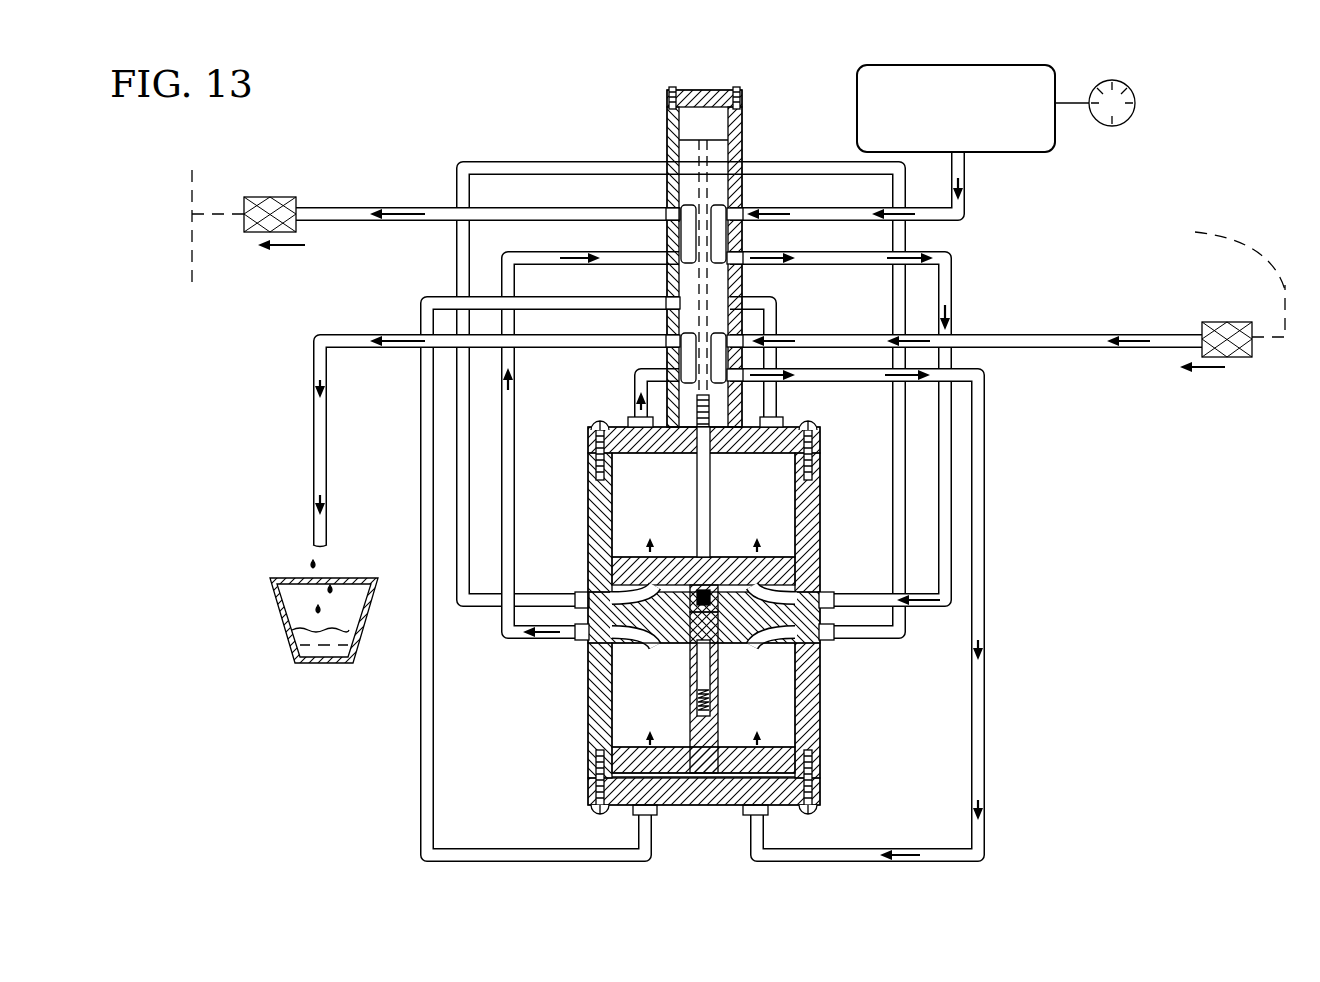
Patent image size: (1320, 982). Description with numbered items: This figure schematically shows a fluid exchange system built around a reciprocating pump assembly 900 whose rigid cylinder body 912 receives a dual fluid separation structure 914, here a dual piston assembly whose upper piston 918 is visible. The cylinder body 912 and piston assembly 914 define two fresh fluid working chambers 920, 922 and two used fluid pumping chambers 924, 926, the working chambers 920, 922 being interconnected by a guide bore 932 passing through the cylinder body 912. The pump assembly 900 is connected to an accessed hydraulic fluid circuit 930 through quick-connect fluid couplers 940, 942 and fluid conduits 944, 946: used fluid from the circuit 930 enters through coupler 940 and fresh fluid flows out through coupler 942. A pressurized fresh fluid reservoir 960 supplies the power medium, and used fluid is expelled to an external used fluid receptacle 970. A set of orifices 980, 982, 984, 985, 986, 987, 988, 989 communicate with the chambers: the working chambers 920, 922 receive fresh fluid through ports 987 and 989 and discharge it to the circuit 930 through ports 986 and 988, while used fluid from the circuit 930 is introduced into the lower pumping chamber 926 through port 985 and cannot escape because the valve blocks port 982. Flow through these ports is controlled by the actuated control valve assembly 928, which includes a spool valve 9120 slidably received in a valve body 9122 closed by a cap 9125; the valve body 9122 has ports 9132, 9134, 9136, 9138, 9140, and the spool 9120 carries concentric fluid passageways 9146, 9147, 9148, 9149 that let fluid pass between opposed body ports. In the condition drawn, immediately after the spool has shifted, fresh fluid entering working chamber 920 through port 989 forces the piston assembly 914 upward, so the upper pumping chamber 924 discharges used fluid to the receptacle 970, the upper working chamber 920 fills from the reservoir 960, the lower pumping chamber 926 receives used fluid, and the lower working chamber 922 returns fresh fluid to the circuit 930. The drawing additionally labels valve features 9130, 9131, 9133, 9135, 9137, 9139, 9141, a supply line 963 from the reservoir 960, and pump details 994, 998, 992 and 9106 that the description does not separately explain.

The control valve assembly 928 is at (661, 97).
The cap 9125 is at (715, 90).
The valve body 9122 is at (742, 118).
The spool valve 9120 is at (745, 150).
The port 9136 is at (668, 172).
The valve port 9137 is at (668, 215).
The port 9138 is at (680, 262).
The valve port 9139 is at (668, 300).
The port 9140 is at (668, 340).
The spool passage 9141 is at (672, 368).
The valve port 9130 is at (742, 170).
The spool passage 9131 is at (742, 255).
The port 9132 is at (742, 262).
The valve port 9133 is at (745, 310).
The port 9134 is at (745, 345).
The valve port 9135 is at (745, 382).
The concentric fluid passageway 9146 is at (795, 252).
The concentric fluid passageway 9147 is at (745, 377).
The concentric fluid passageway 9148 is at (605, 252).
The concentric fluid passageway 9149 is at (660, 390).
The hydraulic fluid circuit 930 is at (192, 183).
The quick-connect fluid coupler 942 is at (278, 197).
The fluid conduit 944 is at (378, 208).
The fluid conduit 946 is at (1075, 333).
The quick-connect coupler 940 is at (1212, 322).
The pressurized fresh fluid reservoir 960 is at (1048, 72).
The supply conduit 963 is at (960, 222).
The port 985 is at (320, 335).
The used fluid receptacle 970 is at (305, 640).
The orifice 980 is at (625, 420).
The orifice 984 is at (790, 421).
The reciprocating pump assembly 900 is at (822, 437).
The upper cylinder 994 is at (800, 475).
The used fluid pumping chamber 924 is at (710, 495).
The piston 918 is at (820, 528).
The fresh fluid working chamber 920 is at (790, 566).
The port 989 is at (822, 600).
The port 988 is at (588, 598).
The port 987 is at (836, 626).
The port 986 is at (580, 637).
The guide bore 932 is at (830, 650).
The fresh fluid working chamber 922 is at (800, 690).
The lower piston rod 998 is at (700, 660).
The spring 992 is at (612, 712).
The cylinder body 912 is at (822, 715).
The dual fluid separation structure 914 is at (822, 752).
The bolt 9106 is at (597, 760).
The used fluid pumping chamber 926 is at (818, 790).
The port 982 is at (655, 815).